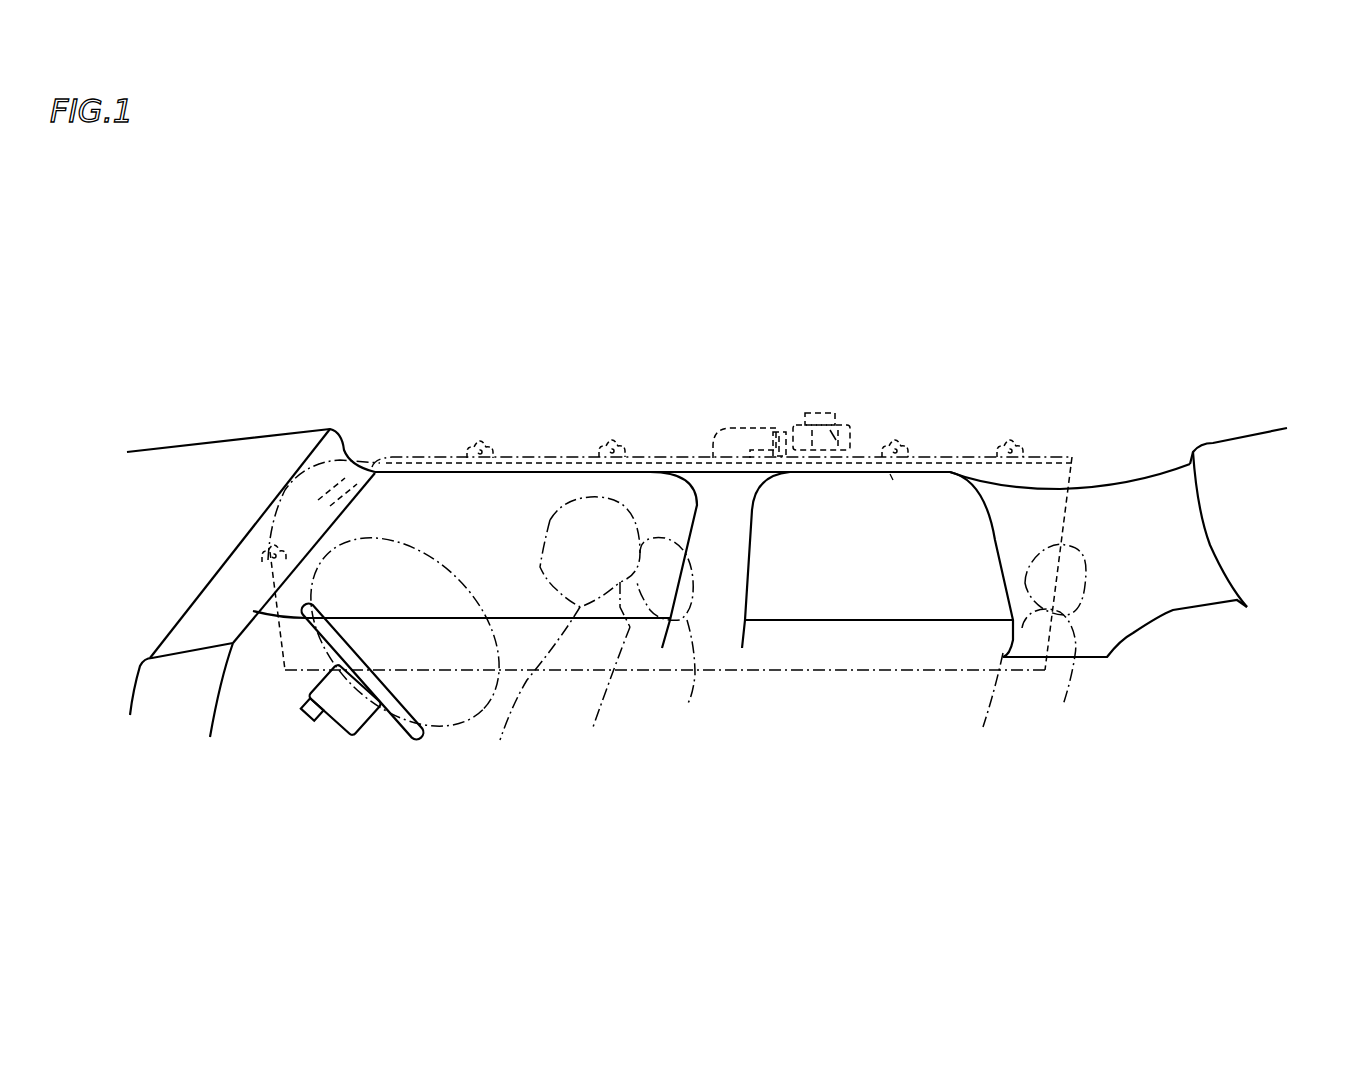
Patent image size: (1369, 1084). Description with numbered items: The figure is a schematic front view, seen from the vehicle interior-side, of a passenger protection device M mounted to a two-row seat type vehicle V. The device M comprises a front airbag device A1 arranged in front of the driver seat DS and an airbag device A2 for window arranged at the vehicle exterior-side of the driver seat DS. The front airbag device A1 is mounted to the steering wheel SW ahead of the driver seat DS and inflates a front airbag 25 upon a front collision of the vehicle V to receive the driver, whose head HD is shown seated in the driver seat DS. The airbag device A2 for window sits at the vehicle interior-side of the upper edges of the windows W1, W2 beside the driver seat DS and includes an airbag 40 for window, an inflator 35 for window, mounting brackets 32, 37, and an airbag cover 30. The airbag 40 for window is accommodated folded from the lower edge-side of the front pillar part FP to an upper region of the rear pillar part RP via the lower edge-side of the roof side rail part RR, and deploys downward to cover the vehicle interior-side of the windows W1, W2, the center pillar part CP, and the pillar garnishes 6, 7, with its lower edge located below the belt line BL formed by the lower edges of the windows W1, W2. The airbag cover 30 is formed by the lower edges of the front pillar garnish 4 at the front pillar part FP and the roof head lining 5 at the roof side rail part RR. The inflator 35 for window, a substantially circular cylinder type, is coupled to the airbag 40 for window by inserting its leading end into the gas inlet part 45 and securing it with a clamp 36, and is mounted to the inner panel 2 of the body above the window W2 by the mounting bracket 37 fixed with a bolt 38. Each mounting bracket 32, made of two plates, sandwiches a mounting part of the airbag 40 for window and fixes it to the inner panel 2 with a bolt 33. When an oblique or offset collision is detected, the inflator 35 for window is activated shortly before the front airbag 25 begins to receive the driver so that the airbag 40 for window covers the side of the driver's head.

The inner panel 2 is at (267, 553).
The front pillar garnish 4 is at (197, 623).
The roof head lining 5 is at (670, 459).
The pillar garnish 6 is at (735, 553).
The pillar garnish 7 is at (1187, 522).
The front airbag 25 is at (432, 573).
The airbag cover 30 is at (338, 497).
The mounting bracket 32 is at (485, 442).
The bolt 33 is at (477, 442).
The inflator for window 35 is at (811, 372).
The clamp 36 is at (777, 424).
The mounting bracket 37 is at (833, 433).
The bolt 38 is at (830, 412).
The airbag for window 40 is at (858, 468).
The gas inlet part 45 is at (743, 423).
The front pillar part FP is at (200, 583).
The rear pillar part RP is at (1229, 552).
The roof side rail part RR is at (1123, 460).
The center pillar part CP is at (755, 513).
The head of occupant HD is at (628, 495).
The driver seat DS is at (695, 692).
The steering wheel SW is at (298, 701).
The window W1 is at (410, 598).
The window W2 is at (843, 603).
The belt line BL is at (800, 622).
The front airbag device A1 is at (366, 731).
The airbag device for window A2 is at (517, 492).
The passenger protection device M is at (478, 853).
The vehicle V is at (1243, 333).